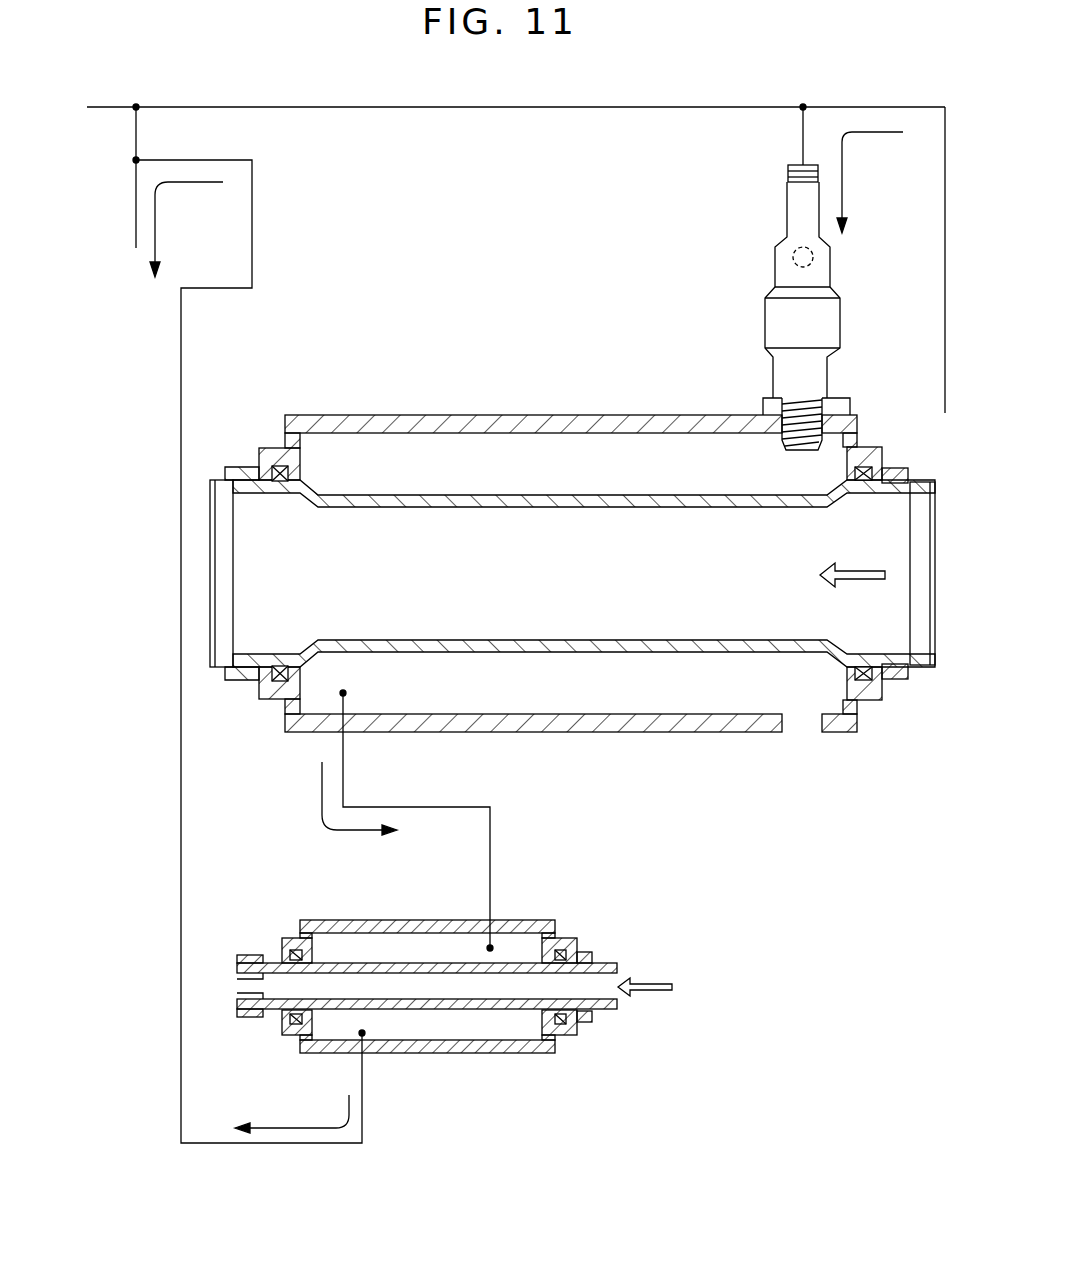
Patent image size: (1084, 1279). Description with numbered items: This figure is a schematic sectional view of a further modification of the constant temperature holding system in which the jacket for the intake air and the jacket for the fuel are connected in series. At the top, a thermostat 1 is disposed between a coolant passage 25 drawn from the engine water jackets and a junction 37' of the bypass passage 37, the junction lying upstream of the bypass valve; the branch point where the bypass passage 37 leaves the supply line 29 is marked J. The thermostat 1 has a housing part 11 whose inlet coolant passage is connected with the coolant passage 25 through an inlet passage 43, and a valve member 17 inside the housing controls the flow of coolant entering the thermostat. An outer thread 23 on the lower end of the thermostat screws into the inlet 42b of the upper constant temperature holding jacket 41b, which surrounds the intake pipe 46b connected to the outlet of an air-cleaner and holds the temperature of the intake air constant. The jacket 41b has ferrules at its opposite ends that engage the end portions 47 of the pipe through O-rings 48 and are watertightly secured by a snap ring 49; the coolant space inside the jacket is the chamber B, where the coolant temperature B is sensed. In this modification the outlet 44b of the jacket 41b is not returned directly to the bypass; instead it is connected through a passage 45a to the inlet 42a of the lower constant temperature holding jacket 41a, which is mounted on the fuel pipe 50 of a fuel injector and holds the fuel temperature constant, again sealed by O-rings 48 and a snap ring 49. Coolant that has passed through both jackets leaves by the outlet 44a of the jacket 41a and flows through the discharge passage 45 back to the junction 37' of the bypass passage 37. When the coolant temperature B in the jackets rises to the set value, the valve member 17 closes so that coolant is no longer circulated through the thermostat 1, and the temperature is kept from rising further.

The thermostat 1 is at (761, 307).
The housing part 11 is at (786, 210).
The valve member 17 is at (793, 263).
The outer thread 23 is at (793, 410).
The coolant passage 25 is at (945, 190).
The fuel supply line 29 is at (110, 107).
The junction J is at (136, 107).
The bypass passage 37 is at (139, 192).
The junction 37' is at (174, 139).
The constant temperature holding jacket 41a is at (345, 937).
The constant temperature holding jacket 41b is at (568, 420).
The inlet 42a is at (490, 925).
The boss for spark plug 42b is at (843, 407).
The inlet passage 43 is at (803, 150).
The outlet 44a is at (362, 1053).
The outlet 44b is at (350, 732).
The discharge passage 45 is at (181, 385).
The passage 45a is at (463, 807).
The intake pipe 46b is at (543, 507).
The end portions 47 is at (272, 497).
The O-rings 48 is at (278, 466).
The snap ring 49 is at (895, 468).
The fuel pipe 50 is at (477, 1009).
The temperature B is at (480, 472).